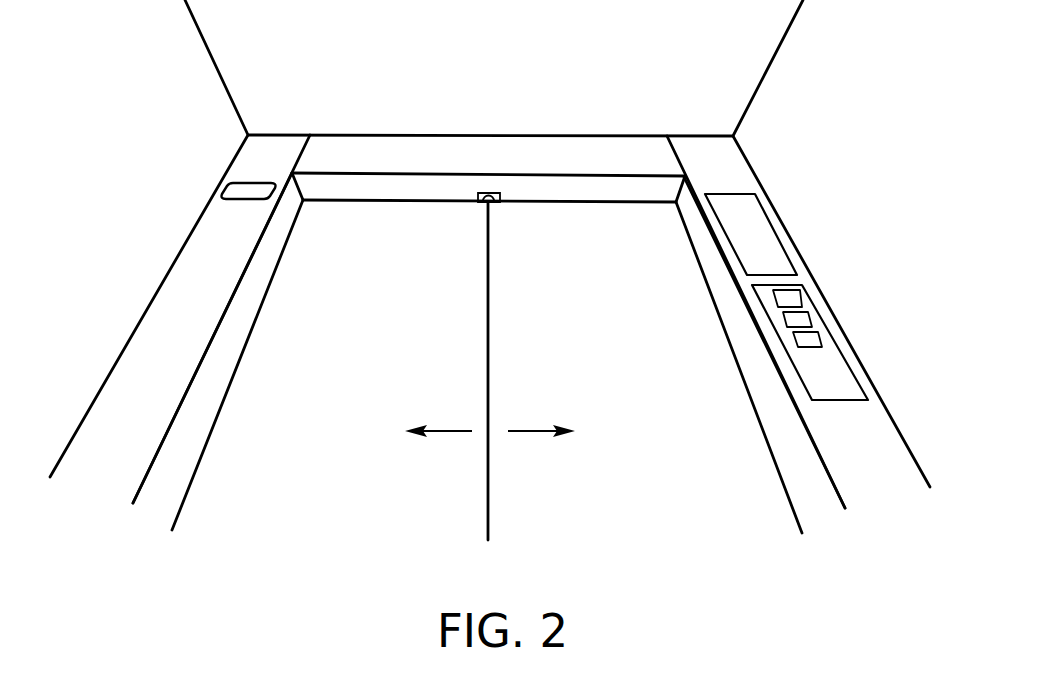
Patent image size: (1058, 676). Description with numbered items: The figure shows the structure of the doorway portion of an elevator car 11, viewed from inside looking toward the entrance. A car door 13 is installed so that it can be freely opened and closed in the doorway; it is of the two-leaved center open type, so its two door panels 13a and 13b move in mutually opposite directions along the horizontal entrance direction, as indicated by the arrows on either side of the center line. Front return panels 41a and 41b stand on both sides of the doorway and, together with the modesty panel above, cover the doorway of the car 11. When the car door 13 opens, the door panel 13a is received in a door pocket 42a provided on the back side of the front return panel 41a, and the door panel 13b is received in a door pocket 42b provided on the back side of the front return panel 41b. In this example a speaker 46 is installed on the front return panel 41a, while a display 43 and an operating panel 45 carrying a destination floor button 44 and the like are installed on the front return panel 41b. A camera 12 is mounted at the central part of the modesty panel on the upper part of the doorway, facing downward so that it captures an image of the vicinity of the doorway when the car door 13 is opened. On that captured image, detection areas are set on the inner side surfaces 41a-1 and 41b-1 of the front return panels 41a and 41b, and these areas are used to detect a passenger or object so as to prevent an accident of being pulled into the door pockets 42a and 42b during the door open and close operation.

The car 11 is at (537, 143).
The camera 12 is at (480, 208).
The car door 13 is at (447, 541).
The door panel 13a is at (398, 485).
The door panel 13b is at (607, 485).
The front return panel 41a is at (130, 363).
The inner side surface 41a-1 is at (188, 462).
The door pocket 42a is at (250, 342).
The front return panel 41b is at (875, 422).
The inner side surface 41b-1 is at (783, 447).
The door pocket 42b is at (715, 313).
The display 43 is at (747, 250).
The destination floor button 44 is at (793, 337).
The operating panel 45 is at (840, 340).
The speaker 46 is at (243, 200).